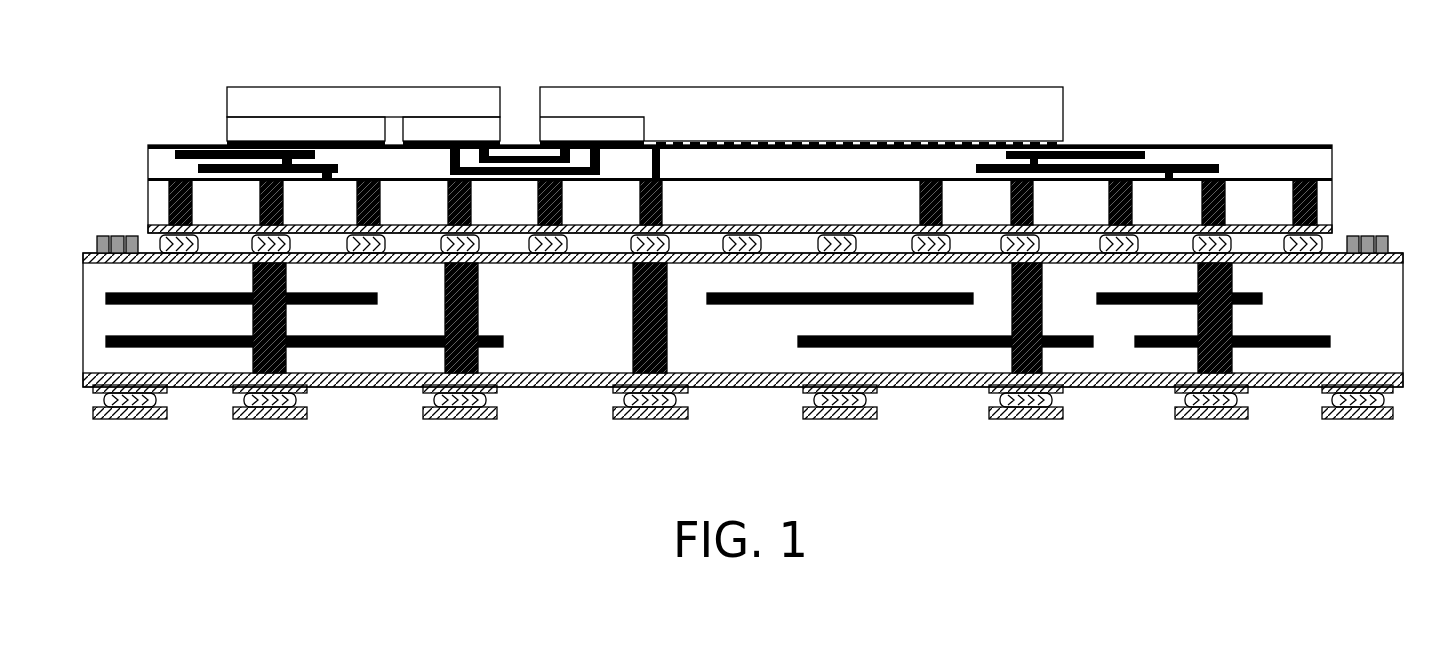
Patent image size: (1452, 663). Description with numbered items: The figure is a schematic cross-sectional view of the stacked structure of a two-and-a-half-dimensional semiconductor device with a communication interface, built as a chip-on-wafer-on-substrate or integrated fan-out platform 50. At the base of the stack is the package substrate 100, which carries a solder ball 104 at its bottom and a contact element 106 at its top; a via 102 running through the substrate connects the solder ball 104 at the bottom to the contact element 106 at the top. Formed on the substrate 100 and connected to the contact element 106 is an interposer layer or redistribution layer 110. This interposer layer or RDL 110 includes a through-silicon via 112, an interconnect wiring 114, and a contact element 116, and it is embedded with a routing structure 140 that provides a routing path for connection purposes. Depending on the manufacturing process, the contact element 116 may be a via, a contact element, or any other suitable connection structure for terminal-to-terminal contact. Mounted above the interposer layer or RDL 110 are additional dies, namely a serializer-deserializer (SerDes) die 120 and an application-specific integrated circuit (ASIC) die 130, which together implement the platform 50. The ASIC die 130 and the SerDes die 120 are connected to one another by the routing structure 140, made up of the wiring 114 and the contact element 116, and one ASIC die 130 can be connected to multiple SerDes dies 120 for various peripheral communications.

The CoWoS or InFO platform 50 is at (1408, 147).
The package substrate 100 is at (560, 355).
The via 102 is at (443, 354).
The solder ball 104 is at (162, 393).
The contact element 106 is at (160, 246).
The interposer layer or redistribution layer (RDL) 110 is at (1340, 147).
The through-silicon via (TSV) 112 is at (1226, 197).
The interconnect wiring 114 is at (1167, 165).
The contact element 116 is at (228, 146).
The SerDes die 120 is at (362, 87).
The ASIC die 130 is at (793, 87).
The routing structure 140 is at (522, 152).